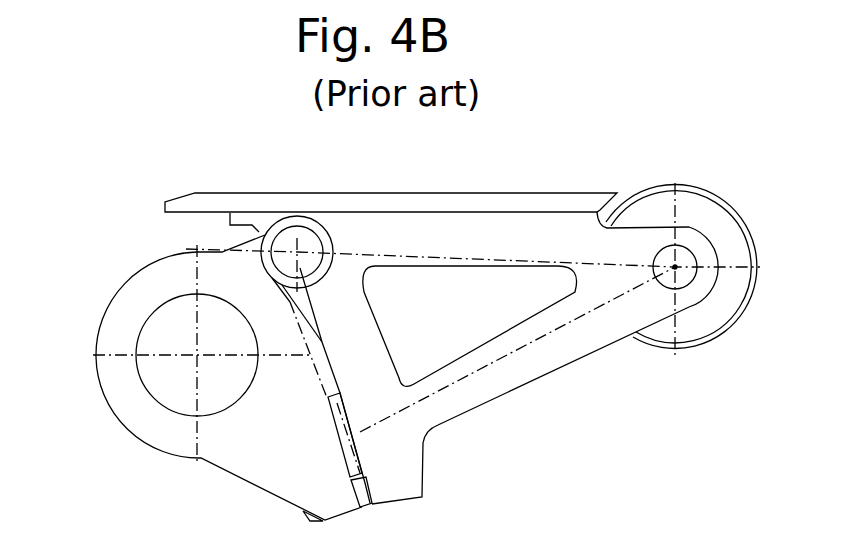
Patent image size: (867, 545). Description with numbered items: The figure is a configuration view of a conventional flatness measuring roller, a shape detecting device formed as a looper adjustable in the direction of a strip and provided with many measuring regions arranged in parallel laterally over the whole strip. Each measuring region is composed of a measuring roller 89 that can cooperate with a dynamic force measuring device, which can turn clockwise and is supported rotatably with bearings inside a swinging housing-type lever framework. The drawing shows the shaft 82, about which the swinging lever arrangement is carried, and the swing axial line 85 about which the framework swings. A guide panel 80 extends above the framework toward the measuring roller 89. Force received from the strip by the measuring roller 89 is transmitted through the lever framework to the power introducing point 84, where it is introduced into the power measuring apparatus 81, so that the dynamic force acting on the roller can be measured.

The guide panel 80 is at (393, 202).
The power measuring apparatus 81 is at (340, 434).
The shaft 82 is at (128, 418).
The power introducing point 84 is at (357, 436).
The swing axial line 85 is at (197, 355).
The measuring roller 89 is at (697, 192).